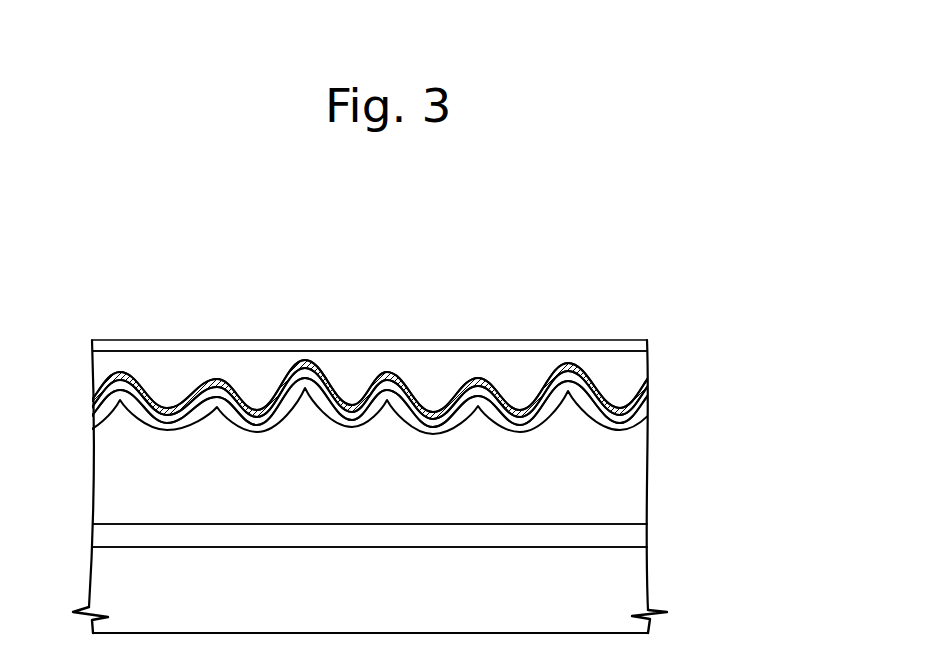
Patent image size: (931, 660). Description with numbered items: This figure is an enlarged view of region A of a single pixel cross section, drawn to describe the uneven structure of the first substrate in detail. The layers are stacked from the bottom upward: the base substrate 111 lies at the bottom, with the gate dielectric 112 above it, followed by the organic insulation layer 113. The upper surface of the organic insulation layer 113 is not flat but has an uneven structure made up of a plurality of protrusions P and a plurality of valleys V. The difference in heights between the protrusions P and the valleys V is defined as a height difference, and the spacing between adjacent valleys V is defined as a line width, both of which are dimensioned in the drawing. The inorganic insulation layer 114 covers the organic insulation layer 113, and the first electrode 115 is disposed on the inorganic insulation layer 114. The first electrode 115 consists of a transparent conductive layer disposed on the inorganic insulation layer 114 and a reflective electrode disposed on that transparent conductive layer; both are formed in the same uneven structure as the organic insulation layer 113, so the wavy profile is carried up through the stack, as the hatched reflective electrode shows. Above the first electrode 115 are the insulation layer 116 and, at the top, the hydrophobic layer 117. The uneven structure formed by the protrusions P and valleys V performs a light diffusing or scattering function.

The base substrate 111 is at (635, 585).
The gate dielectric 112 is at (635, 532).
The organic insulation layer 113 is at (635, 480).
The inorganic insulation layer 114 is at (642, 418).
The first electrode 115 is at (425, 385).
The insulation layer 116 is at (633, 362).
The hydrophobic layer 117 is at (648, 342).
The region A is at (142, 276).
The protrusions P is at (305, 391).
The valleys V is at (352, 434).